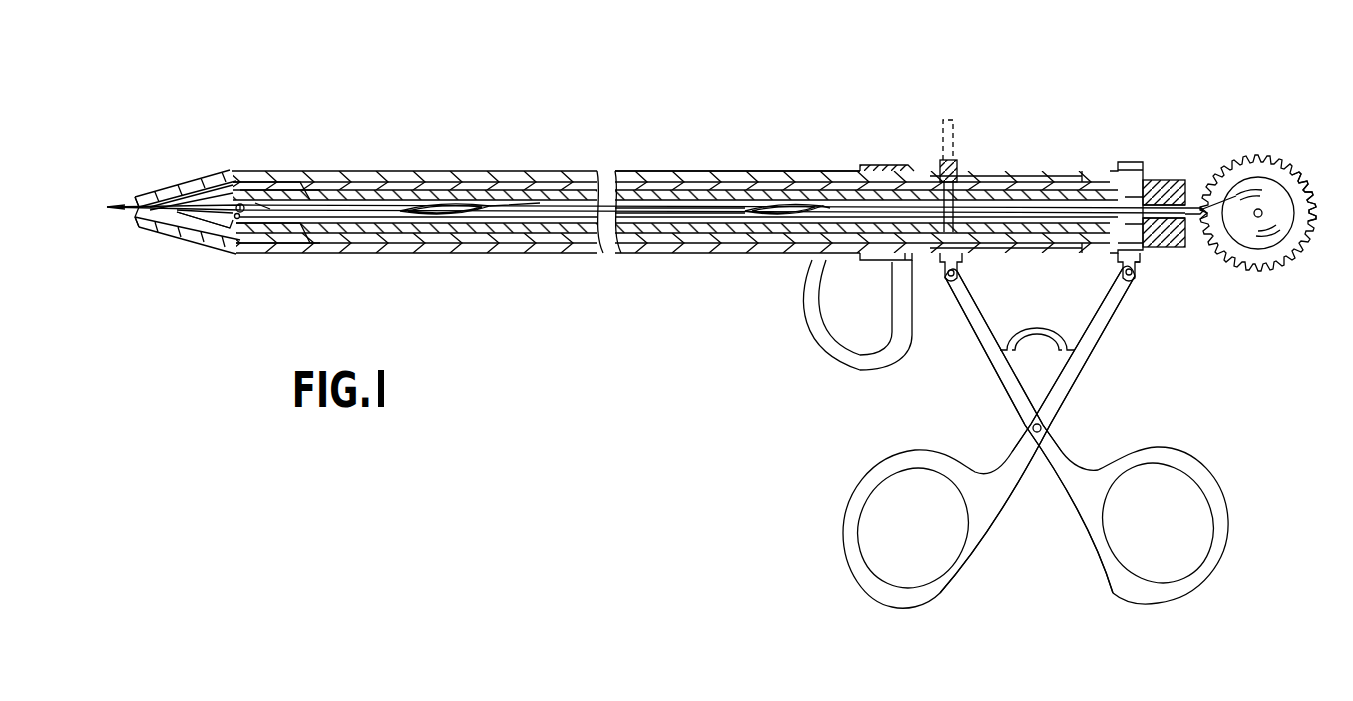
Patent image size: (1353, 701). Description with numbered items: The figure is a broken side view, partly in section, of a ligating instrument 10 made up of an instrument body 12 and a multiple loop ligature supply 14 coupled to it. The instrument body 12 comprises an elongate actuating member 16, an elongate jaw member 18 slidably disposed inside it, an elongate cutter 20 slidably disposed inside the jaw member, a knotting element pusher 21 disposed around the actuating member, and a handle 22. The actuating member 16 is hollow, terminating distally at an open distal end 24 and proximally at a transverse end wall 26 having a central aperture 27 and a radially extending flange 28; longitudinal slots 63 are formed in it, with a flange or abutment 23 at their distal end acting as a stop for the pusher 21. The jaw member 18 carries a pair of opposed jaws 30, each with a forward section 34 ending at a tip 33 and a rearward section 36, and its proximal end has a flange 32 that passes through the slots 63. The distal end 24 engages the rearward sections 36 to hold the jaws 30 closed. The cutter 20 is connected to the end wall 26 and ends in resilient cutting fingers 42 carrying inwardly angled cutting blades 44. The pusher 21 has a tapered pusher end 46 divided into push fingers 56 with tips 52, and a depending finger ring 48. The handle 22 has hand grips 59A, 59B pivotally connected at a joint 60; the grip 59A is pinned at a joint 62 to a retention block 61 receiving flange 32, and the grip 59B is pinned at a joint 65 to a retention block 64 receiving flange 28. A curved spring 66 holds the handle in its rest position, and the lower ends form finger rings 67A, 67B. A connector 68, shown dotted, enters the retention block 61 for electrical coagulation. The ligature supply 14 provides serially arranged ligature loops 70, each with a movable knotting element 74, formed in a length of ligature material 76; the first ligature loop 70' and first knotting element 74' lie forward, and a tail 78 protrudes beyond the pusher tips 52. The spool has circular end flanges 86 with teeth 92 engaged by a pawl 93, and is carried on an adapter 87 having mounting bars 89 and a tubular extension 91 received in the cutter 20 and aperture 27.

The ligating instrument 10 is at (537, 90).
The instrument body 12 is at (630, 170).
The multiple loop ligature supply 14 is at (1256, 152).
The elongate actuating member 16 is at (530, 246).
The elongate jaw member 18 is at (432, 184).
The elongate cutter 20 is at (508, 223).
The knotting element pusher 21 is at (480, 173).
The handle 22 is at (999, 527).
The flange or abutment 23 is at (880, 166).
The open distal end 24 is at (316, 173).
The transverse end wall 26 is at (1136, 168).
The central aperture 27 is at (1143, 200).
The flange 28 is at (1141, 268).
The jaws 30 is at (300, 182).
The flange 32 is at (958, 176).
The jaw tip 33 is at (150, 199).
The forward section 34 is at (200, 195).
The rearward section 36 is at (278, 196).
The cutting fingers 42 is at (241, 204).
The cutting blades 44 is at (233, 194).
The pusher end 46 is at (188, 190).
The finger ring 48 is at (832, 353).
The pusher tips 52 is at (125, 206).
The push fingers 56 is at (176, 190).
The hand grip 59A is at (1008, 405).
The hand grip 59B is at (1088, 370).
The joint 60 is at (1046, 426).
The retention block 61 is at (932, 262).
The joint 62 is at (951, 281).
The longitudinal slots 63 is at (1022, 181).
The retention block 64 is at (1133, 282).
The joint 65 is at (1120, 273).
The curved spring 66 is at (1012, 380).
The finger ring 67A is at (1222, 568).
The finger ring 67B is at (915, 600).
The connector 68 is at (940, 148).
The ligature loops 70 is at (611, 256).
The first ligature loop 70' is at (203, 263).
The movable knotting element 74 is at (660, 153).
The first knotting element 74' is at (277, 153).
The ligature material 76 is at (672, 226).
The tail 78 is at (112, 209).
The circular end flanges 86 is at (1296, 190).
The adapter 87 is at (1166, 185).
The mounting bars 89 is at (1196, 205).
The tubular extension 91 is at (1118, 180).
The teeth 92 is at (1310, 245).
The pawl 93 is at (1206, 226).